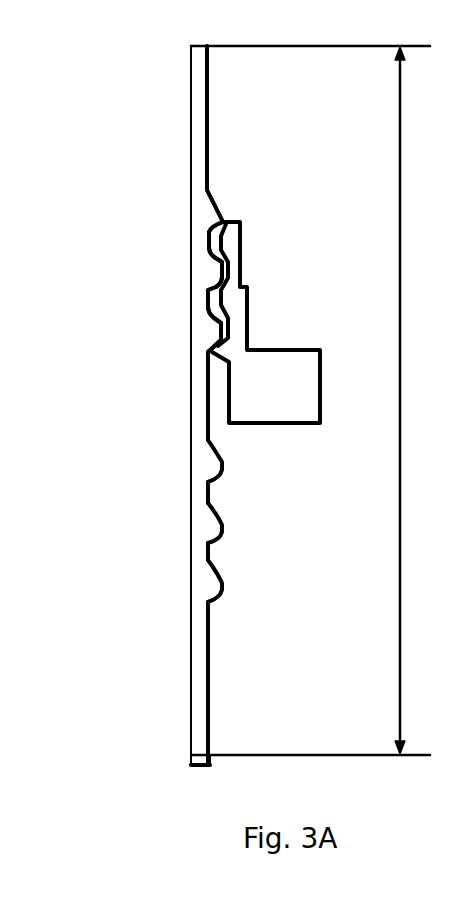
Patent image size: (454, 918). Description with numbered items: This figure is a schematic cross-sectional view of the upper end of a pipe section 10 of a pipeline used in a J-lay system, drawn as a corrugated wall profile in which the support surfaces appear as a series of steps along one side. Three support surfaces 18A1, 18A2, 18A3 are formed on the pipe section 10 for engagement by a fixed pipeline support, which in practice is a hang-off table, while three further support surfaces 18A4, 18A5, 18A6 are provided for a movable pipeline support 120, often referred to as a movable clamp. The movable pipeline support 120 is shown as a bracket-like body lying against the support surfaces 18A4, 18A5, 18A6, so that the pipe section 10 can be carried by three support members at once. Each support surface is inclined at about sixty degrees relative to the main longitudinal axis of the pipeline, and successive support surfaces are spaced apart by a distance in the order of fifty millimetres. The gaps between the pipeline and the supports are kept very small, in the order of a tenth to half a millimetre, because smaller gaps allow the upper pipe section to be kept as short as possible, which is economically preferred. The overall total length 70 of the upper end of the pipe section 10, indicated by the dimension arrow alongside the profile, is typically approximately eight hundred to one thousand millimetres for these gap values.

The pipe section 10 is at (200, 137).
The movable pipeline support 120 is at (236, 309).
The total length 70 is at (400, 328).
The support surface 18A1 is at (219, 480).
The support surface 18A2 is at (217, 540).
The support surface 18A3 is at (215, 600).
The support surface 18A4 is at (212, 224).
The support surface 18A5 is at (212, 288).
The support surface 18A6 is at (215, 346).